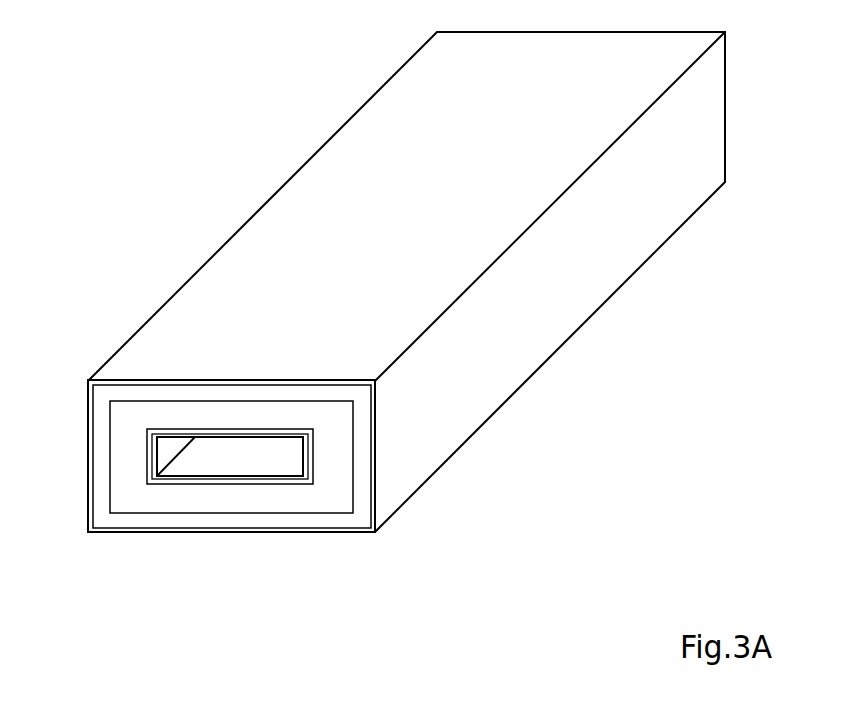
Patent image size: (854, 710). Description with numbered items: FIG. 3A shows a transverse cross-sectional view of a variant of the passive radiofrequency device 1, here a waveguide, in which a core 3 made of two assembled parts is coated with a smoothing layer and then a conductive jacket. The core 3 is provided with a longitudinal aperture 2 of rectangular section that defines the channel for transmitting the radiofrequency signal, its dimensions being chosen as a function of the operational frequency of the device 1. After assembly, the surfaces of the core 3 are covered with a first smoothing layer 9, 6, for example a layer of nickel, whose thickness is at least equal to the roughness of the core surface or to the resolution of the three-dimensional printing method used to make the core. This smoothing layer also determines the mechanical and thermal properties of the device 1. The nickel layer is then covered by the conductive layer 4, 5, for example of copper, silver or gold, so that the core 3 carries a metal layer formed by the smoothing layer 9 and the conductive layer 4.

The device 1 is at (380, 350).
The longitudinal aperture 2 is at (239, 462).
The core 3 is at (278, 493).
The conductive layer 4 is at (158, 448).
The conductive layer 5 is at (373, 513).
The smoothing layer 6 is at (360, 473).
The smoothing layer 9 is at (152, 457).